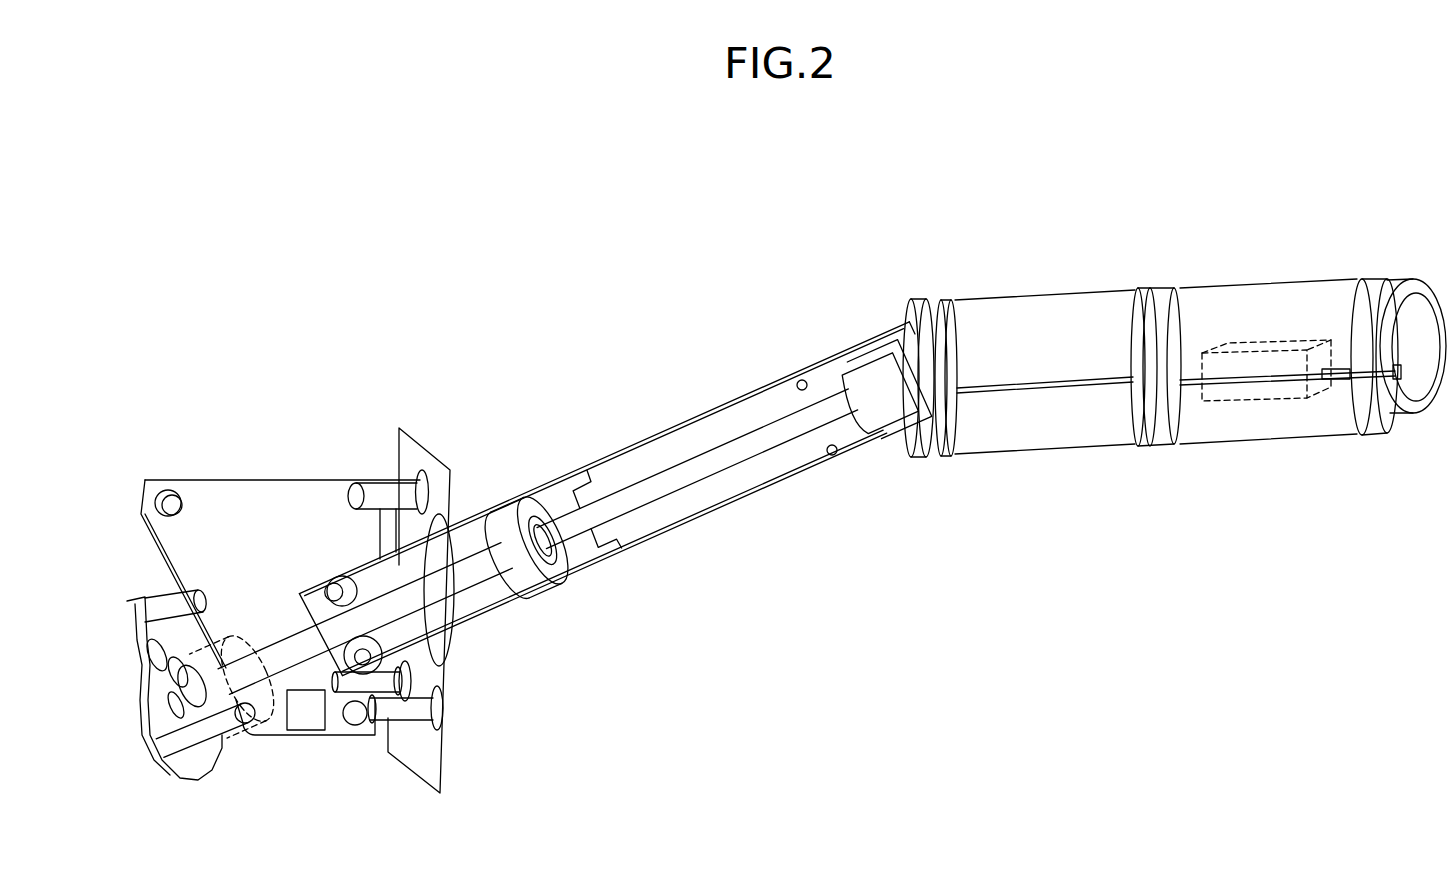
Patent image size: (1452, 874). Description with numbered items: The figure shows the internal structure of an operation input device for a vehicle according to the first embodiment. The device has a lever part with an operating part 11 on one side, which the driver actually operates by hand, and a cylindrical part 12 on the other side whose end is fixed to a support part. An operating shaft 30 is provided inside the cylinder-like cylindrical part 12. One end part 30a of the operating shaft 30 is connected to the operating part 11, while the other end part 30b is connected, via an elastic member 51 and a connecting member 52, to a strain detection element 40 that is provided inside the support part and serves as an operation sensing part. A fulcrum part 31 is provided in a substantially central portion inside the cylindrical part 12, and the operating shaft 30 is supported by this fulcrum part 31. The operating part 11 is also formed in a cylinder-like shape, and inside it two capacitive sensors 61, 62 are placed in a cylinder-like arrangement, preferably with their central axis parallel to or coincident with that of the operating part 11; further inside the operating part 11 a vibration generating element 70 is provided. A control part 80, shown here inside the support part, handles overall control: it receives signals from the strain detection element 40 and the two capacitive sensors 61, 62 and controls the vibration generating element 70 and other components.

The operating part 11 is at (1165, 276).
The cylindrical part 12 is at (712, 404).
The operating shaft 30 is at (640, 497).
The one end part 30a is at (838, 393).
The other end part 30b is at (233, 713).
The fulcrum part 31 is at (530, 580).
The strain detection element 40 is at (188, 707).
The elastic member 51 is at (180, 666).
The connecting member 52 is at (206, 652).
The capacitive sensor 61 is at (1050, 323).
The capacitive sensor 62 is at (1268, 310).
The vibration generating element 70 is at (1253, 402).
The control part 80 is at (306, 715).